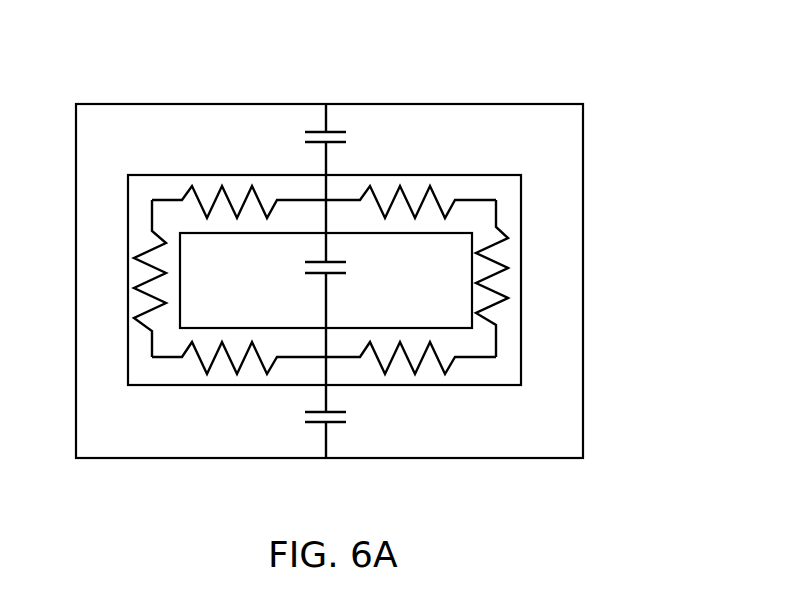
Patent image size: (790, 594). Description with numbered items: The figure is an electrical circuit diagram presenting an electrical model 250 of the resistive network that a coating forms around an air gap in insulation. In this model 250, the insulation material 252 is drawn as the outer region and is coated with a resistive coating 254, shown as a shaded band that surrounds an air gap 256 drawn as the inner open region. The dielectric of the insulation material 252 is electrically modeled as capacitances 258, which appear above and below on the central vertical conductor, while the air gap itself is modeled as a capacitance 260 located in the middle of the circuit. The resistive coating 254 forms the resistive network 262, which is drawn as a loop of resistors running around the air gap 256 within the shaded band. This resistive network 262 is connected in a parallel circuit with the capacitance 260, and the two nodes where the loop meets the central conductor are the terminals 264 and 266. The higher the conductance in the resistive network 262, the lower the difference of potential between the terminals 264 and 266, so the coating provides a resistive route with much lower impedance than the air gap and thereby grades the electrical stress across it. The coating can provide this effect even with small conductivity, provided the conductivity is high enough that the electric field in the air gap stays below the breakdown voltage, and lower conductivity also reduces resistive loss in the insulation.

The electrical model 250 is at (356, 257).
The insulation material 252 is at (468, 123).
The resistive coating 254 is at (497, 373).
The air gap 256 is at (230, 303).
The capacitances 258 is at (278, 135).
The capacitance 260 is at (372, 285).
The resistive network 262 is at (478, 198).
The terminal 264 is at (340, 195).
The terminal 266 is at (341, 367).